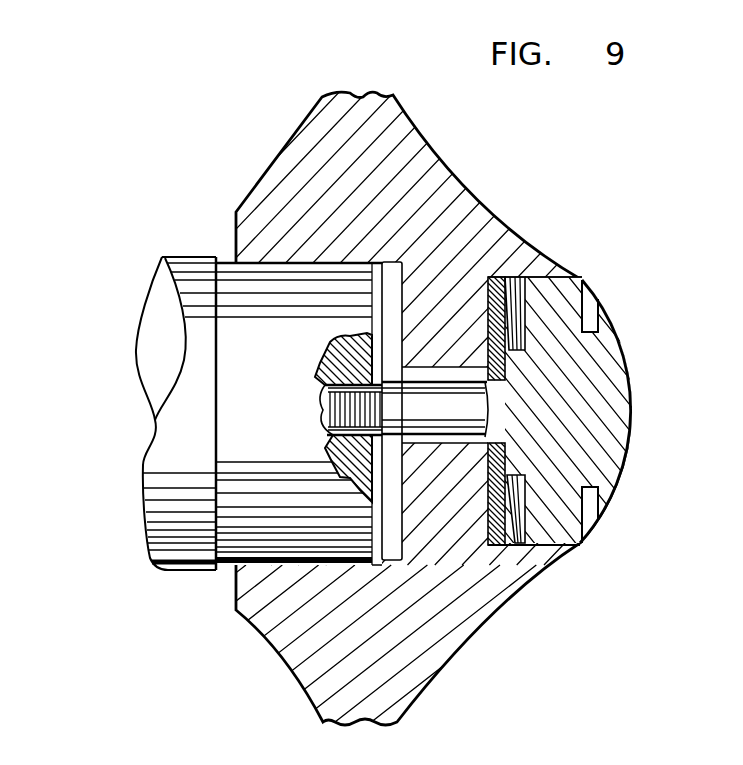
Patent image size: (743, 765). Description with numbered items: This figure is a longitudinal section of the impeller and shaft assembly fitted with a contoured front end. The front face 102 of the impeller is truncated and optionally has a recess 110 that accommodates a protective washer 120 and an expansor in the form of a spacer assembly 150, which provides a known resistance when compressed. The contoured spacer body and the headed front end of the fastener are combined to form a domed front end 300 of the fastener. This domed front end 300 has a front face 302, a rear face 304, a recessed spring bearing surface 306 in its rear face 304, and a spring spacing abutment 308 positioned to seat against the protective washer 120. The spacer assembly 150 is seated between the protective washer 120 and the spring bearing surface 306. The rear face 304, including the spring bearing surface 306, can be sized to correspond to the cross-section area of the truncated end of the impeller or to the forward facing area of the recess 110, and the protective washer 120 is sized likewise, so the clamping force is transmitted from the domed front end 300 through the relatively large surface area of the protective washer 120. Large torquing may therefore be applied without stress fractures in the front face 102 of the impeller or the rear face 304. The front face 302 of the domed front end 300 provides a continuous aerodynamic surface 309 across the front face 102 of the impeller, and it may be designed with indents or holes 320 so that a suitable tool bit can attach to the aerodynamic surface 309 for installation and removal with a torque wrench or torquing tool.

The front face 102 is at (477, 186).
The recess 110 is at (540, 287).
The spacer assembly 150 is at (577, 285).
The indents or holes 320 is at (590, 302).
The protective washer 120 is at (500, 370).
The spring spacing abutment 308 is at (527, 387).
The continuous aerodynamic surface 309 is at (622, 414).
The domed front end 300 is at (602, 493).
The front face 302 is at (580, 545).
The recessed spring bearing surface 306 is at (522, 545).
The rear face 304 is at (485, 445).